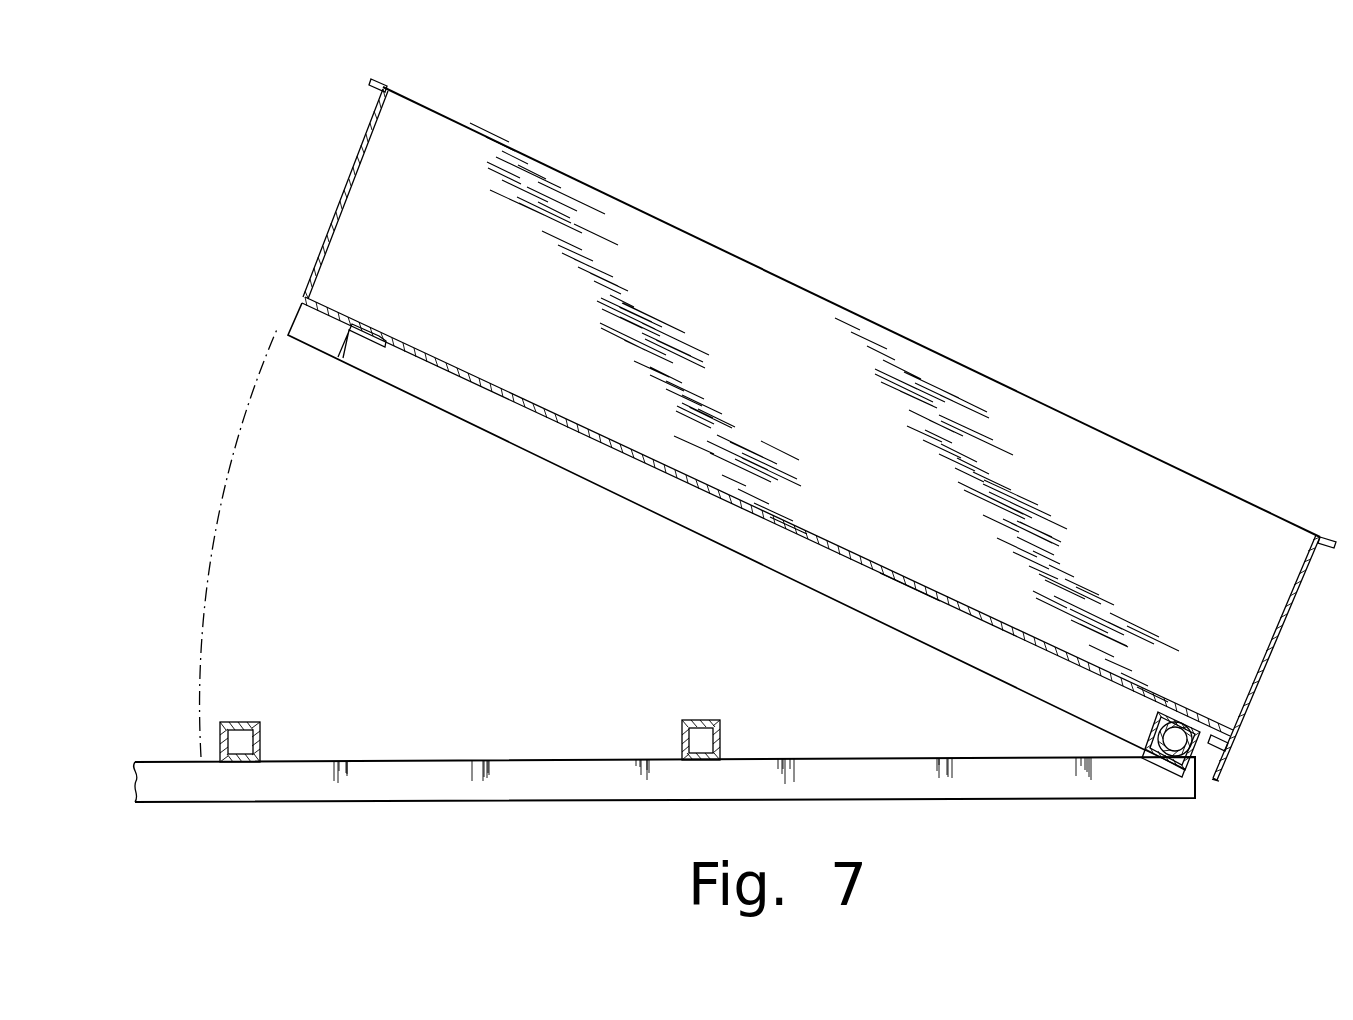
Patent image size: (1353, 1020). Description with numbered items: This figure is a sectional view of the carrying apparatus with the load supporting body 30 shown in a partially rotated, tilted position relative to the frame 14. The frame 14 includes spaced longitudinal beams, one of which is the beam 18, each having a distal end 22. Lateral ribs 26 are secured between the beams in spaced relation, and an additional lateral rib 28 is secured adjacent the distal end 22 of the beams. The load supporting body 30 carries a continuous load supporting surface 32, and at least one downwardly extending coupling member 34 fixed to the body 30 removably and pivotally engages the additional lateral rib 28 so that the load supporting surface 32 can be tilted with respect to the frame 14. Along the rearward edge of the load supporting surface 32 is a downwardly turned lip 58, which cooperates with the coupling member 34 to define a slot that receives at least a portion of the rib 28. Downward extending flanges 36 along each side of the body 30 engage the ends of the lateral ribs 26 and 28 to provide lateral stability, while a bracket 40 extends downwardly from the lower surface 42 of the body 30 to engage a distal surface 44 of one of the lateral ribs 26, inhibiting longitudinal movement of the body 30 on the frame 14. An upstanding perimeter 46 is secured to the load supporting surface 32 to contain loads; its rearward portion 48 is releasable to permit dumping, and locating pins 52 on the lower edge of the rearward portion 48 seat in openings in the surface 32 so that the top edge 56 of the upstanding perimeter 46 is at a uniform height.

The frame 14 is at (664, 827).
The longitudinal beam 18 is at (1012, 790).
The distal end 22 is at (1195, 792).
The lateral rib 26 is at (232, 720).
The additional lateral rib 28 is at (1200, 775).
The load supporting body 30 is at (819, 448).
The load supporting surface 32 is at (456, 366).
The coupling member 34 is at (1150, 722).
The downward extending flange 36 is at (730, 530).
The bracket 40 is at (357, 362).
The lower surface 42 is at (903, 596).
The distal surface 44 is at (496, 713).
The upstanding perimeter 46 is at (770, 275).
The rearward portion 48 is at (1282, 646).
The locating pin 52 is at (1232, 744).
The top edge 56 is at (1331, 527).
The downwardly turned lip 58 is at (1240, 770).